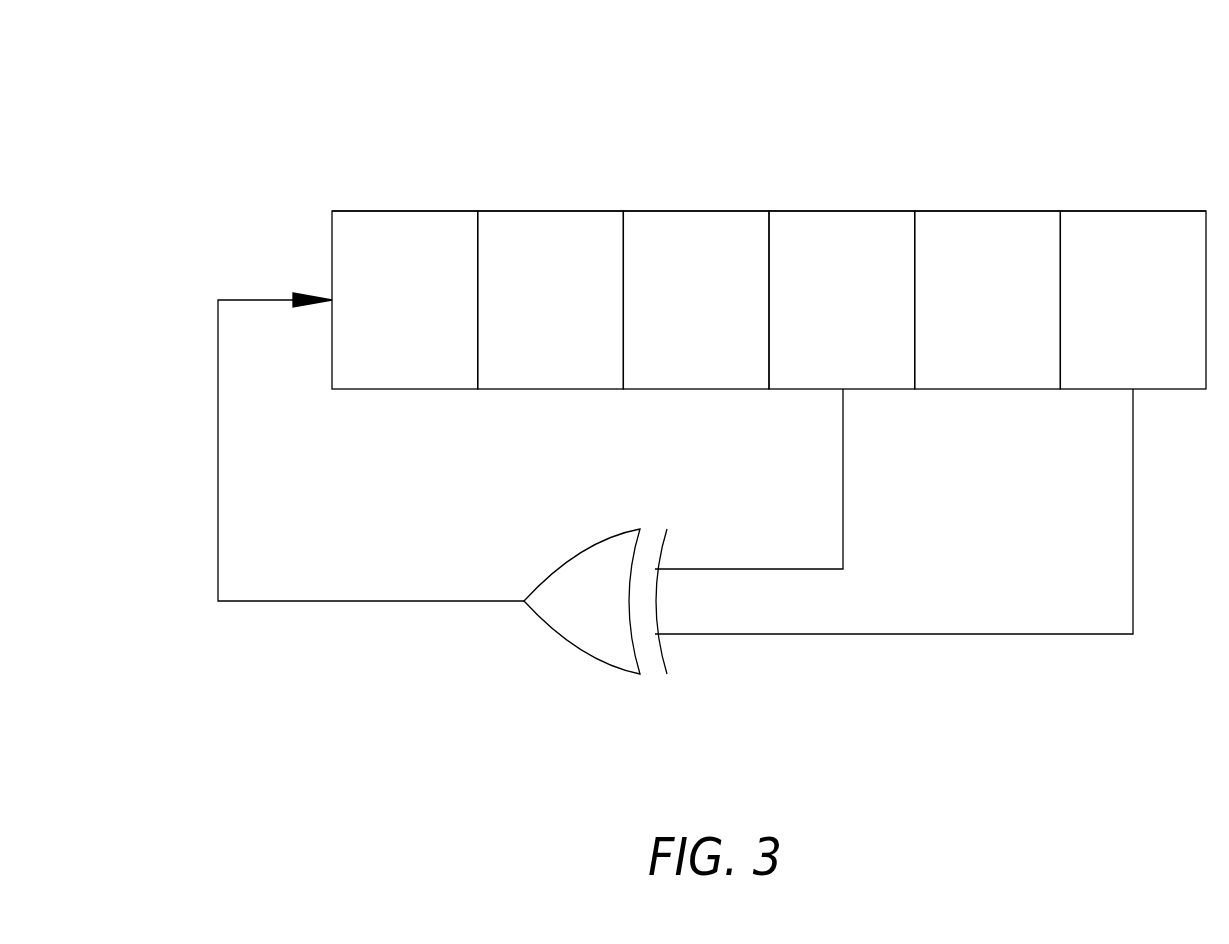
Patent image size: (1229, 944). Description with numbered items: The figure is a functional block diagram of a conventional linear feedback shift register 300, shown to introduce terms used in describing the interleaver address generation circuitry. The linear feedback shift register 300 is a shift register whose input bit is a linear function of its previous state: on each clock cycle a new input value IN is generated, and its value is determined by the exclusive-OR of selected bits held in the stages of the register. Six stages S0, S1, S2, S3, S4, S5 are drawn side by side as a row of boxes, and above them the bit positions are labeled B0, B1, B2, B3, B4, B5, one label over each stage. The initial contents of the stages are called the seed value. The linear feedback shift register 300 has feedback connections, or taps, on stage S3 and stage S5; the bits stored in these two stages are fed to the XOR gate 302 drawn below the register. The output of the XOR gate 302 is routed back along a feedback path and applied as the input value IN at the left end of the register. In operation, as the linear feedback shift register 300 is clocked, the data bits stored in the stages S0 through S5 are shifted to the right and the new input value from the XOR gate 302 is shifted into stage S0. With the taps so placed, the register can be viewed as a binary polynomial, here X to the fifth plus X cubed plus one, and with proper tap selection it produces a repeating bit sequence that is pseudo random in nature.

The linear feedback shift register 300 is at (263, 95).
The XOR gate 302 is at (573, 653).
The input value IN is at (371, 430).
The stage S0 is at (405, 300).
The stage S1 is at (551, 300).
The stage S2 is at (696, 300).
The stage S3 is at (842, 300).
The stage S4 is at (988, 300).
The stage S5 is at (1133, 300).
The bit 0 B0 is at (405, 190).
The bit 1 B1 is at (551, 190).
The bit 2 B2 is at (696, 190).
The bit 3 B3 is at (842, 190).
The bit 4 B4 is at (988, 190).
The bit 5 B5 is at (1133, 190).